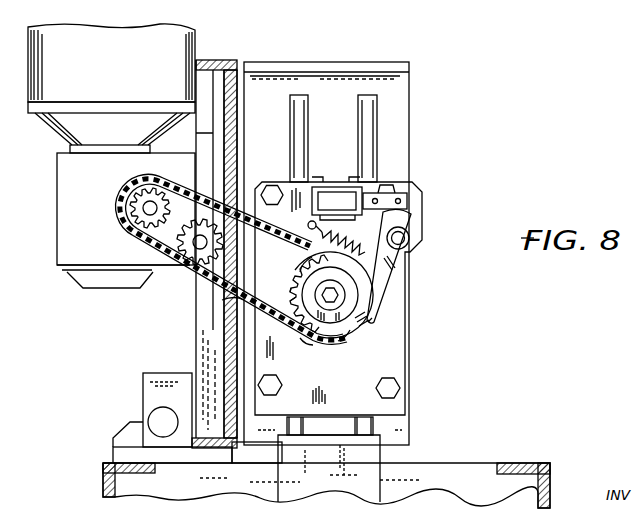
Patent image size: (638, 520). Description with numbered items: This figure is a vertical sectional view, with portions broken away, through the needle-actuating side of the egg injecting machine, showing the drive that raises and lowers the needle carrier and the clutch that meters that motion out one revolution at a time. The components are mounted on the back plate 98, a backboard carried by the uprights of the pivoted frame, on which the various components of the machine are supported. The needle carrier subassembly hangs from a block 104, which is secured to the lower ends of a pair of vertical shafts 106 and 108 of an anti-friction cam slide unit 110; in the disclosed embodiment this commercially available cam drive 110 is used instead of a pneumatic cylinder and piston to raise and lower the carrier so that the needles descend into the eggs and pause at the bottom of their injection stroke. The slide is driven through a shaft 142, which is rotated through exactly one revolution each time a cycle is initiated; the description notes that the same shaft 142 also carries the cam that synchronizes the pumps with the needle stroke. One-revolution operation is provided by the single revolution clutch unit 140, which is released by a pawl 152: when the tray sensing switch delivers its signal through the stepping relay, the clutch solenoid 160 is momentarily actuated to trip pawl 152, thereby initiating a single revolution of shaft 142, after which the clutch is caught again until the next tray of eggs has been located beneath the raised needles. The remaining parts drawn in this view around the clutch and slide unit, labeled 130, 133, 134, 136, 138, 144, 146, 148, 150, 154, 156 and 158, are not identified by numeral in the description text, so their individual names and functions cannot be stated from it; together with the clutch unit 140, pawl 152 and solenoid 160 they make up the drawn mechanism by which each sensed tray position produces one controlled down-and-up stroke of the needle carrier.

The back plate 98 is at (223, 353).
The block 104 is at (372, 458).
The vertical shaft 106 is at (372, 94).
The vertical shaft 108 is at (300, 94).
The anti-friction cam slide unit 110 is at (411, 345).
The drive sprocket 130 is at (143, 207).
The idler gear 133 is at (157, 246).
The driven sprocket 134 is at (300, 268).
The drive chain 136 is at (196, 273).
The chain guide 138 is at (222, 300).
The single revolution clutch unit 140 is at (297, 345).
The shaft 142 is at (291, 290).
The hub 144 is at (348, 340).
The pawl tip 146 is at (389, 305).
The ratchet wheel rim 148 is at (357, 335).
The cam disc 150 is at (368, 297).
The pawl 152 is at (385, 277).
The pivot 154 is at (409, 236).
The spring 156 is at (374, 238).
The actuator arm 158 is at (398, 201).
The clutch solenoid 160 is at (336, 187).